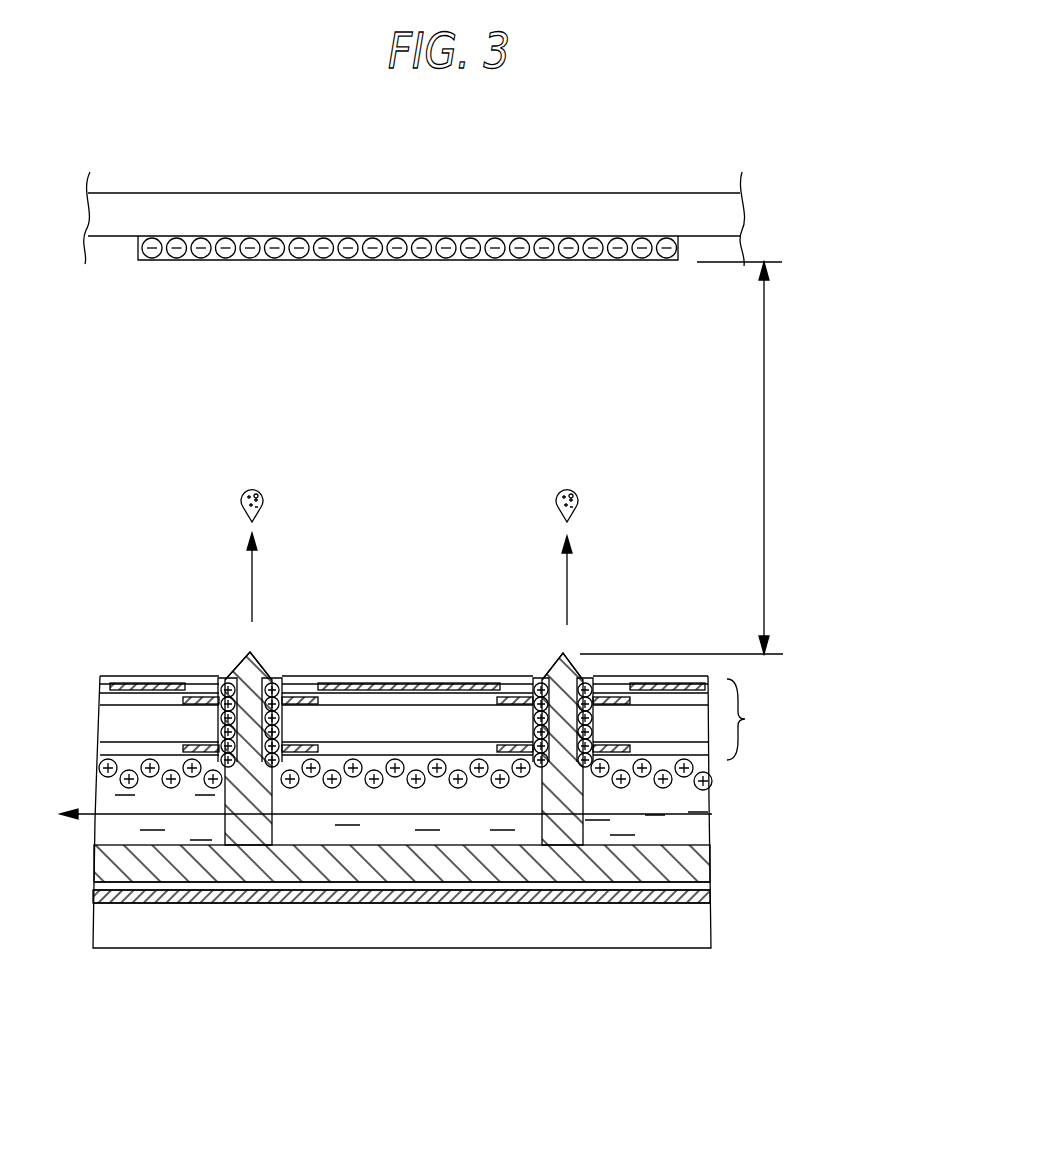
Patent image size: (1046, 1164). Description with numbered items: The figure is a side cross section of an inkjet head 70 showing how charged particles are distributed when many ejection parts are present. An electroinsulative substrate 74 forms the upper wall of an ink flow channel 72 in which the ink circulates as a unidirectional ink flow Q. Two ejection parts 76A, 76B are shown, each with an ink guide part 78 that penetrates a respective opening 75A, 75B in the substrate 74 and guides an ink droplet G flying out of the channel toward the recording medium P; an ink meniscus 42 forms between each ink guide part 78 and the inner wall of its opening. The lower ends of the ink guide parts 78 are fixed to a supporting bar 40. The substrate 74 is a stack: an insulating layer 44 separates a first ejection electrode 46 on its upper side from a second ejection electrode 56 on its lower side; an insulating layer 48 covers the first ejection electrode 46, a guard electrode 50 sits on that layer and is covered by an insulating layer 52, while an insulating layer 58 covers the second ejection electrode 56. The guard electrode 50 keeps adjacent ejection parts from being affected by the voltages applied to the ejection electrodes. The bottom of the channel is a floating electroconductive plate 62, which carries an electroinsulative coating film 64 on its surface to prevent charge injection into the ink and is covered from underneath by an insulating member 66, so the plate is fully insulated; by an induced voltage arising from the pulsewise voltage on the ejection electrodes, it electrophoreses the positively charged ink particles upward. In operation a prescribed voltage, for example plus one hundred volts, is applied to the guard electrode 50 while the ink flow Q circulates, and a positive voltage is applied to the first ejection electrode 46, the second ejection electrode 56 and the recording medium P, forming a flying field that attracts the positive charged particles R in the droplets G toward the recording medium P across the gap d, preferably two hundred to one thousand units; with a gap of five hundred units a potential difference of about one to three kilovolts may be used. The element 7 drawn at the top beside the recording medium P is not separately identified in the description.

The recording medium 7 is at (748, 210).
The recording medium P is at (668, 264).
The gap d is at (764, 470).
The ink droplet G is at (265, 497).
The inkjet head 70 is at (810, 583).
The ejection part 76A is at (287, 702).
The ejection part 76B is at (569, 686).
The opening 75A is at (283, 661).
The opening 75B is at (541, 675).
The ink meniscus 42 is at (197, 682).
The ink guide part 78 is at (227, 680).
The guard electrode 50 is at (115, 680).
The insulating layer 52 is at (197, 682).
The insulating layer 44 is at (107, 712).
The insulating layer 48 is at (142, 698).
The first ejection electrode 46 is at (302, 706).
The second ejection electrode 56 is at (360, 744).
The insulating layer 58 is at (445, 745).
The positive charged particles R is at (504, 778).
The ink flow Q is at (92, 816).
The electroinsulative substrate 74 is at (400, 670).
The ink flow channel 72 is at (700, 838).
The supporting bar 40 is at (700, 876).
The electroinsulative coating film 64 is at (700, 888).
The floating electroconductive plate 62 is at (700, 898).
The insulating member 66 is at (695, 935).